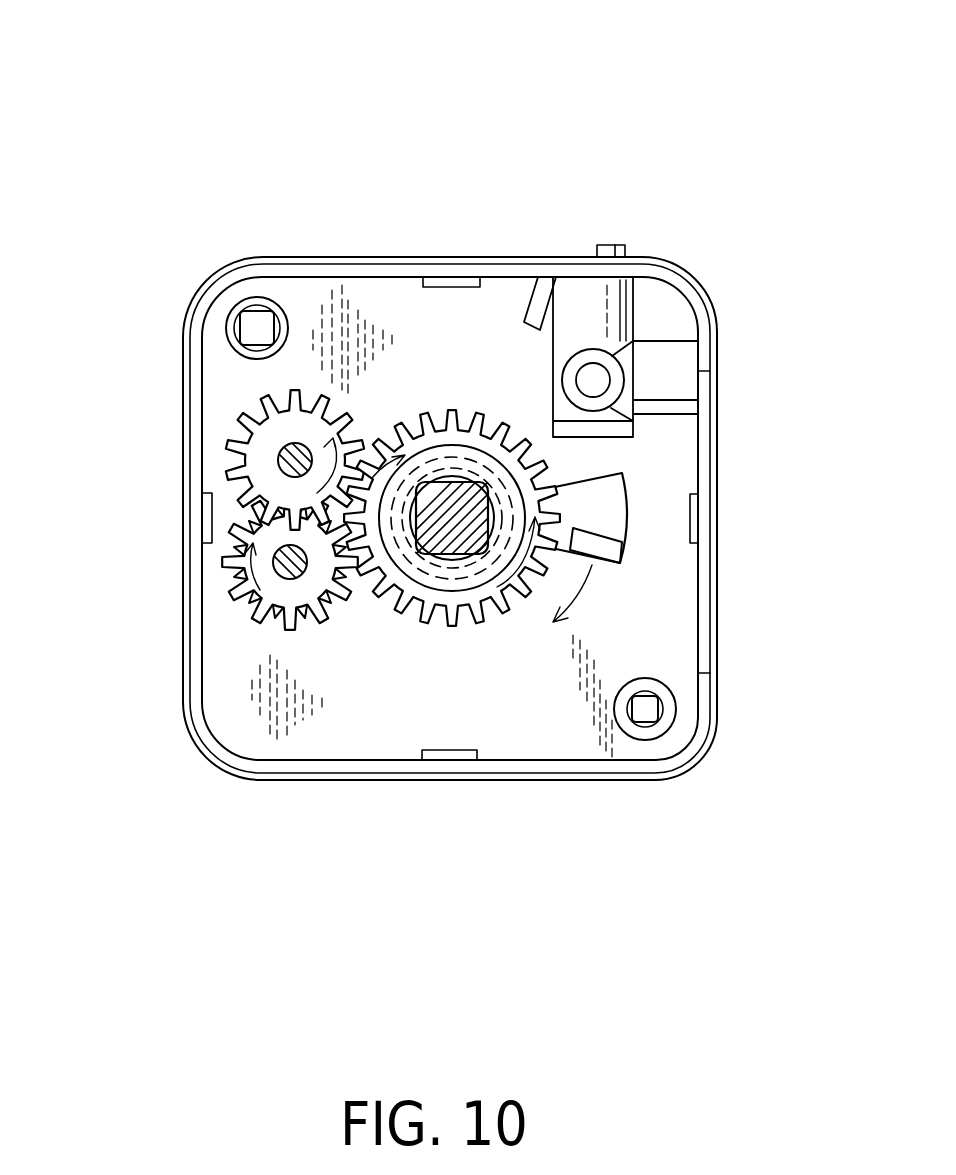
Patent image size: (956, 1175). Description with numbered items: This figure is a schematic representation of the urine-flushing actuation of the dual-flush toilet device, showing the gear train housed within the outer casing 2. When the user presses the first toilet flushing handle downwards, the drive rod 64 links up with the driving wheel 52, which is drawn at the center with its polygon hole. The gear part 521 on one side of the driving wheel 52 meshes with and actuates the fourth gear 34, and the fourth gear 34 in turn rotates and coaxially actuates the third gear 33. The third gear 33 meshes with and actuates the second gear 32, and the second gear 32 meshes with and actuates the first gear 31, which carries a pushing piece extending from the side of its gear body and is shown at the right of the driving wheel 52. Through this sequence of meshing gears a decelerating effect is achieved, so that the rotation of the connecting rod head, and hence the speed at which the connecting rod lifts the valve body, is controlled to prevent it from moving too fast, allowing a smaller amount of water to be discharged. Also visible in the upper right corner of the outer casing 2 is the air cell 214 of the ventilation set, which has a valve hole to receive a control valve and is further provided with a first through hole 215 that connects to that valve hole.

The outer casing 2 is at (408, 257).
The driving wheel 52 is at (513, 420).
The gear part 521 is at (405, 613).
The drive rod 64 is at (452, 528).
The air cell 214 is at (618, 303).
The first through hole 215 is at (597, 380).
The second gear 32 is at (240, 437).
The third gear 33 is at (226, 563).
The fourth gear 34 is at (275, 623).
The first gear 31 is at (612, 513).